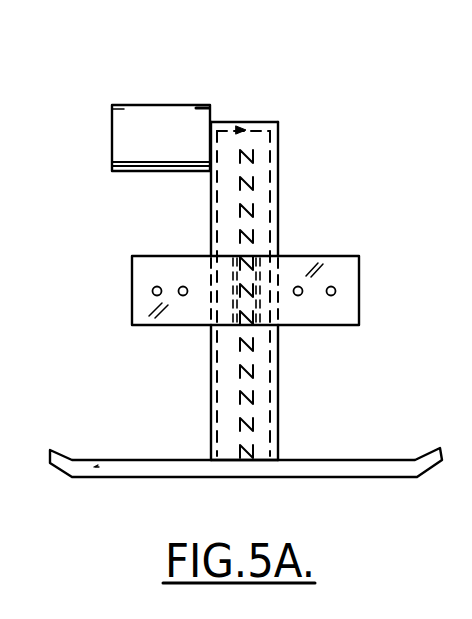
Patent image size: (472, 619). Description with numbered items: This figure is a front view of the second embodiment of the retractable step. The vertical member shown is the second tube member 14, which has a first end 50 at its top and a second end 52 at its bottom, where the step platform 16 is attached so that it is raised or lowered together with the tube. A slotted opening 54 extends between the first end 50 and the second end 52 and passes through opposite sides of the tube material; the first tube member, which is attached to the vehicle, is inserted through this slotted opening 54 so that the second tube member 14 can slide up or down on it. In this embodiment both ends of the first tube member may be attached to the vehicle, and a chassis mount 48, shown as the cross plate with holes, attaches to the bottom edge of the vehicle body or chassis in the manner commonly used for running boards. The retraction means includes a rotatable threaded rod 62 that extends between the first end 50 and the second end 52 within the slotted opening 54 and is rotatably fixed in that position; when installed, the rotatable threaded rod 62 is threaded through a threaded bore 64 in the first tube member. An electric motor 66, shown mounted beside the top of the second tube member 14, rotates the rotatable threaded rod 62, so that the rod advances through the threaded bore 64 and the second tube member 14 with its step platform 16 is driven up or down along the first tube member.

The second tube member 14 is at (264, 121).
The step platform 16 is at (298, 460).
The chassis mount 48 is at (357, 255).
The first end 50 is at (224, 121).
The second end 52 is at (228, 462).
The slotted opening 54 is at (259, 154).
The rotatable threaded rod 62 is at (253, 199).
The threaded bore 64 is at (278, 221).
The electric motor 66 is at (140, 103).